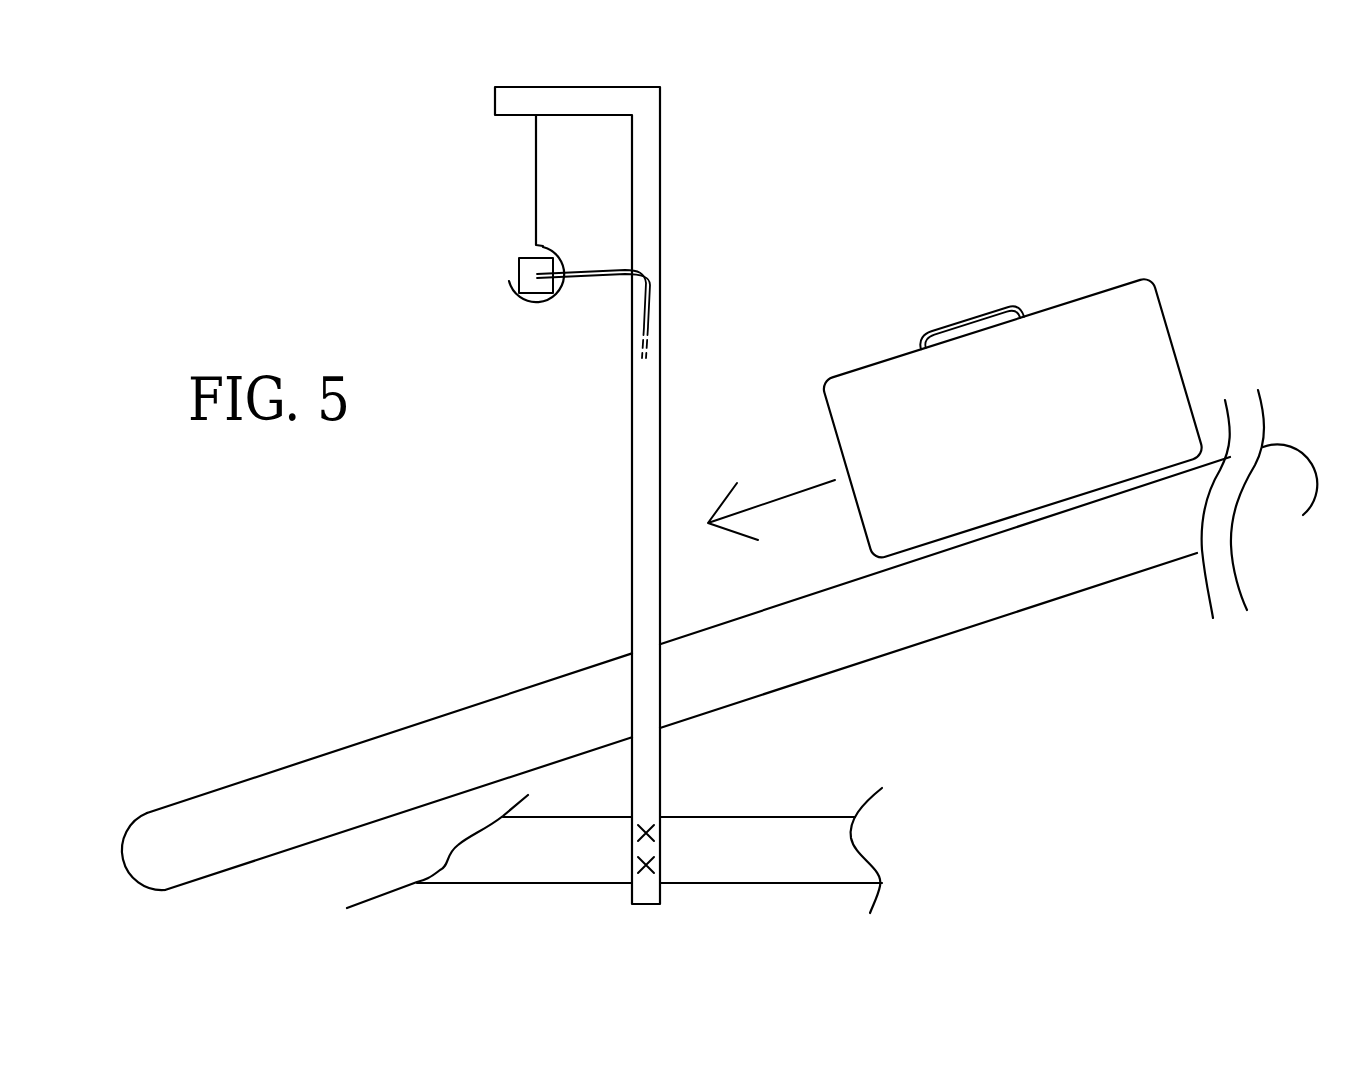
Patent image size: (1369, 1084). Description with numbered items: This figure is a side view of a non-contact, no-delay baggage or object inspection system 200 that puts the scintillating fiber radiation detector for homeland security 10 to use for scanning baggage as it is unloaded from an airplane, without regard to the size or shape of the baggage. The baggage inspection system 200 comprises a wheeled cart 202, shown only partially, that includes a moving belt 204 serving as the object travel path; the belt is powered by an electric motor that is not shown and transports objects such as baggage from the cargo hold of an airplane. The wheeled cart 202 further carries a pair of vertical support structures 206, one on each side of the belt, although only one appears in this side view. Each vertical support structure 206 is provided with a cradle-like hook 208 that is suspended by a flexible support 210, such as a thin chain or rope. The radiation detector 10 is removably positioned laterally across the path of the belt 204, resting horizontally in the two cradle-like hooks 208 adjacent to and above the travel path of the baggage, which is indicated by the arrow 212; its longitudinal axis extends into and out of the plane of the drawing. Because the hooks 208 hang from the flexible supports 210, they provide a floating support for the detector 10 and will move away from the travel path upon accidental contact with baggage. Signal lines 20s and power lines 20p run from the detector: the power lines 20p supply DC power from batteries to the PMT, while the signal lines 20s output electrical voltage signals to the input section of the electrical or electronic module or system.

The baggage inspection system 200 is at (303, 537).
The wheeled cart 202 is at (705, 840).
The moving belt 204 is at (392, 733).
The vertical support structure 206 is at (645, 151).
The cradle-like hook 208 is at (522, 298).
The flexible support 210 is at (534, 168).
The arrow indicating travel path 212 is at (788, 495).
The scintillating fiber radiation detector for homeland security 10 is at (518, 267).
The signal lines 20s is at (679, 300).
The power lines 20p is at (660, 282).